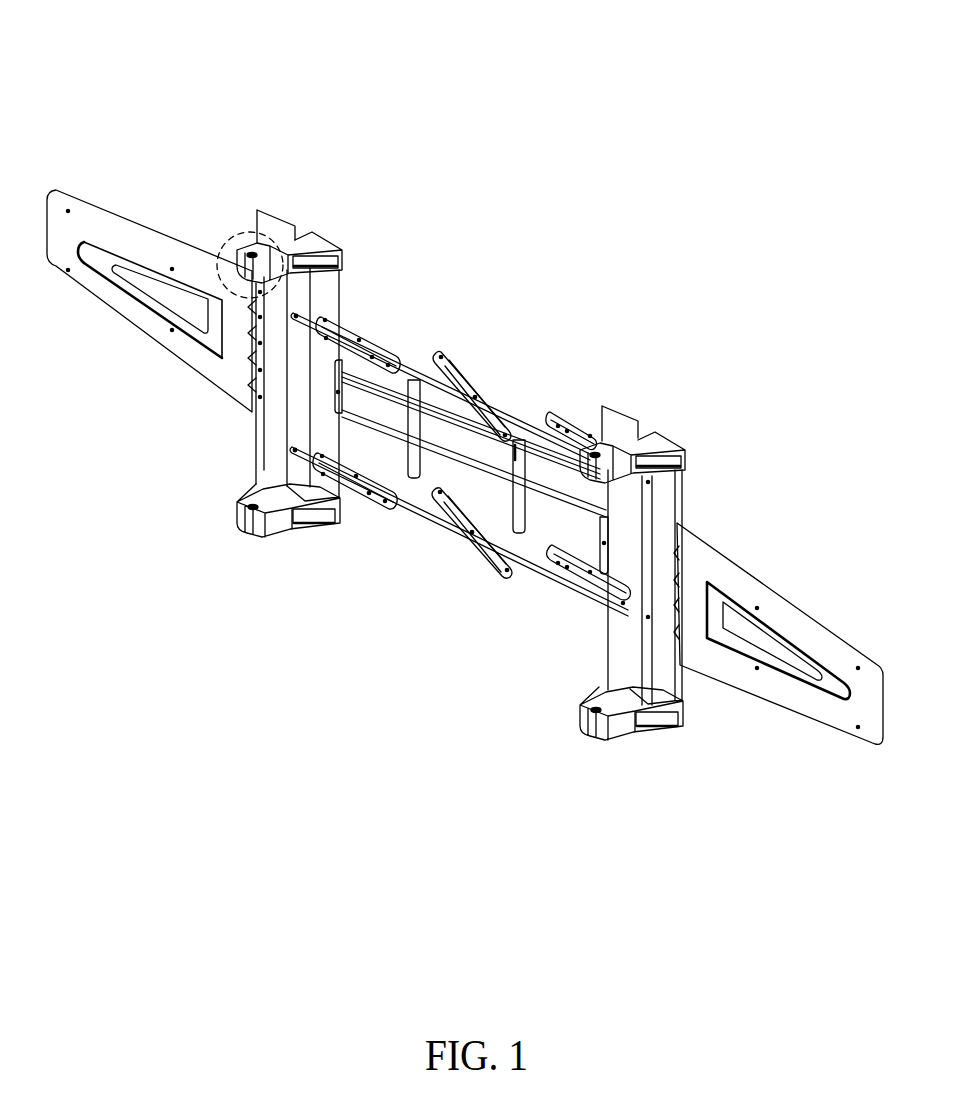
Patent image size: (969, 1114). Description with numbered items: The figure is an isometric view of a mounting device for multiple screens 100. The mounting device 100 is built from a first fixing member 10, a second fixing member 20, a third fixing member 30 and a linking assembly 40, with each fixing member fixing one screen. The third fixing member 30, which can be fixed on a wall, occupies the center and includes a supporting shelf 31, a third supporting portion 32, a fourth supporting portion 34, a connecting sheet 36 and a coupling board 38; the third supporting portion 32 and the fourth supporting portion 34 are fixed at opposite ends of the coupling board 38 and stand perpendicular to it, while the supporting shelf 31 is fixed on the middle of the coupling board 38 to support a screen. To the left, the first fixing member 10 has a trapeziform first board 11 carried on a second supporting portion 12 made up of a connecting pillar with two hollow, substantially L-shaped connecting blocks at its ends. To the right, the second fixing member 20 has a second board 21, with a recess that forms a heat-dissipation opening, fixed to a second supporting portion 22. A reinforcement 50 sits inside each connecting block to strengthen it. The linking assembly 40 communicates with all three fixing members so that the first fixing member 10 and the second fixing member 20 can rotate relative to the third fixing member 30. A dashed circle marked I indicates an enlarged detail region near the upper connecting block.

The mounting device for multiple screens 100 is at (536, 100).
The first fixing member 10 is at (222, 158).
The first board 11 is at (115, 240).
The second supporting portion 12 is at (273, 221).
The detail region I is at (232, 247).
The third supporting portion 32 is at (327, 248).
The third fixing member 30 is at (416, 229).
The connecting sheet 36 is at (387, 410).
The coupling board 38 is at (395, 406).
The supporting shelf 31 is at (517, 440).
The fourth supporting portion 34 is at (617, 418).
The second fixing member 20 is at (788, 437).
The second board 21 is at (791, 622).
The second supporting portion 22 is at (686, 453).
The linking assembly 40 is at (460, 545).
The reinforcement 50 is at (312, 517).